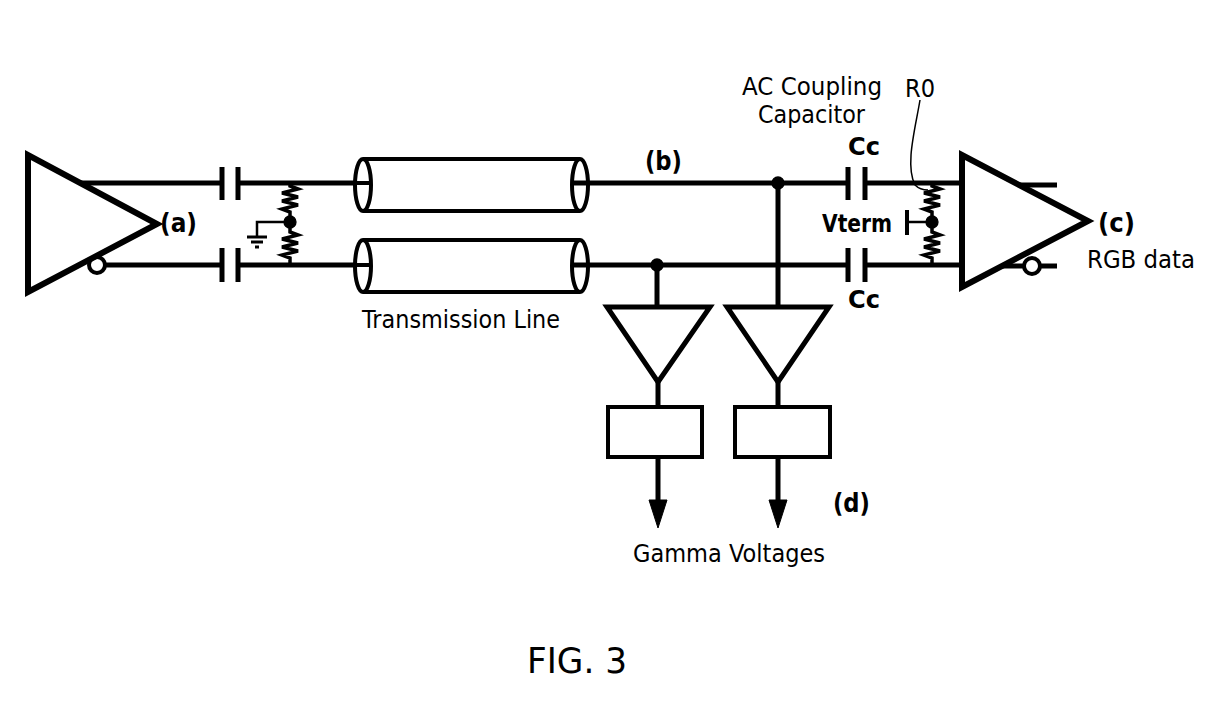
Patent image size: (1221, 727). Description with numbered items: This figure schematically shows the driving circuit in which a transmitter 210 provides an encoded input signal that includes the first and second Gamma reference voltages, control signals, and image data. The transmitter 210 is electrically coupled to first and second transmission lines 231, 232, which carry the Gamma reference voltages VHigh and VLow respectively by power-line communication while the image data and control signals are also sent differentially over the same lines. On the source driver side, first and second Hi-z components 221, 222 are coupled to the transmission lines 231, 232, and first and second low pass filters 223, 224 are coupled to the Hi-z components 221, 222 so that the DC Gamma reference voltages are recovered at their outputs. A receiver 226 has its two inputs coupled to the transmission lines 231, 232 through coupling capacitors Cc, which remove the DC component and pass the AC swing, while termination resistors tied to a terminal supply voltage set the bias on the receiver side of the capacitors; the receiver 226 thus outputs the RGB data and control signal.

The transmitter 210 is at (65, 197).
The receiver 226 is at (995, 182).
The first transmission line 231 is at (427, 262).
The second transmission line 232 is at (530, 178).
The first Hi-z component 221 is at (650, 362).
The second Hi-z component 222 is at (790, 362).
The first low pass filter 223 is at (625, 440).
The second low pass filter 224 is at (810, 430).